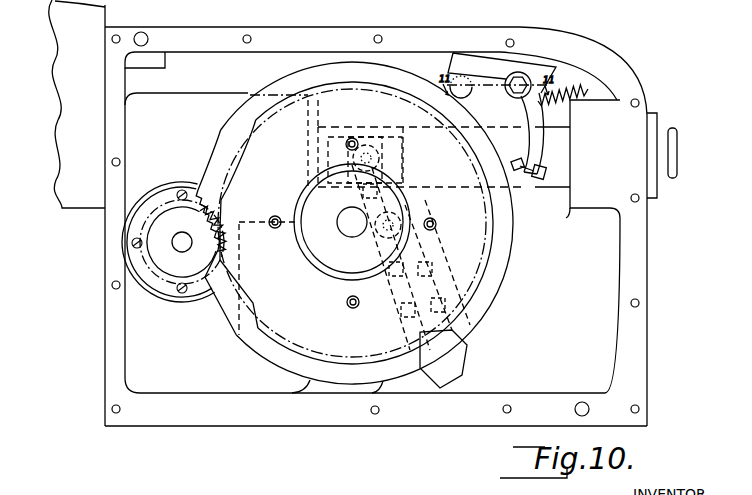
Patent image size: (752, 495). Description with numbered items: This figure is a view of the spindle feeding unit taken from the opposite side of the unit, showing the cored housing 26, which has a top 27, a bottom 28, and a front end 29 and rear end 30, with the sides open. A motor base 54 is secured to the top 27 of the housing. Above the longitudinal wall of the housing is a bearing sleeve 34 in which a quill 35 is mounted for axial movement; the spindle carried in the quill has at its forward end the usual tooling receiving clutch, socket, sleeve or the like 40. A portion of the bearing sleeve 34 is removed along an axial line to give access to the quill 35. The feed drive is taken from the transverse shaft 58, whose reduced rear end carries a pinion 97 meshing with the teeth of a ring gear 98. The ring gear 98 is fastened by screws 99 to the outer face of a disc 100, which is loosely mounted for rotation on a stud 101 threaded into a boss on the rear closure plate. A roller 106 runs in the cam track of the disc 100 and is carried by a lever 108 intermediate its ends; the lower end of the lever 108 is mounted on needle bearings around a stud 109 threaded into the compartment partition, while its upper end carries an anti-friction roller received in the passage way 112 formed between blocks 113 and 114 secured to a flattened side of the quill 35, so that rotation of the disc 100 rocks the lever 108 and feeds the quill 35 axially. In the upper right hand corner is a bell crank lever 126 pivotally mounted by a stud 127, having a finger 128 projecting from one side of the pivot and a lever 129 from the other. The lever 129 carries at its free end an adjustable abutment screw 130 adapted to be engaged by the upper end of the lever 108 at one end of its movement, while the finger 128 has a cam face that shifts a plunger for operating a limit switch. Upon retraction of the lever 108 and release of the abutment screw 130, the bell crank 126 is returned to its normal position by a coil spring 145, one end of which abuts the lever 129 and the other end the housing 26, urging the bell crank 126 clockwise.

The cored housing 26 is at (653, 73).
The top 27 is at (282, 33).
The bottom 28 is at (327, 413).
The front end 29 is at (633, 266).
The rear end 30 is at (108, 338).
The bearing sleeve 34 is at (232, 75).
The quill 35 is at (521, 188).
The tooling receiving clutch, socket, sleeve or the like 40 is at (660, 140).
The motor base 54 is at (77, 198).
The transverse shaft 58 is at (180, 247).
The pinion 97 is at (148, 268).
The ring gear 98 is at (245, 155).
The screws 99 is at (275, 230).
The disc 100 is at (227, 305).
The stud 101 is at (353, 233).
The roller 106 is at (407, 214).
The lever 108 is at (432, 288).
The stud 109 is at (456, 356).
The passage way 112 is at (383, 118).
The block 113 is at (350, 120).
The block 114 is at (402, 144).
The bell crank lever 126 is at (525, 73).
The stud 127 is at (535, 78).
The finger 128 is at (485, 42).
The lever 129 is at (537, 142).
The adjustable abutment screw 130 is at (548, 173).
The coil spring 145 is at (578, 88).